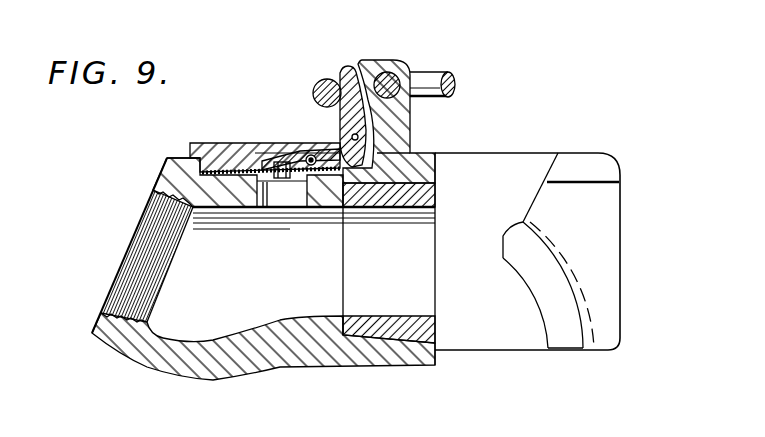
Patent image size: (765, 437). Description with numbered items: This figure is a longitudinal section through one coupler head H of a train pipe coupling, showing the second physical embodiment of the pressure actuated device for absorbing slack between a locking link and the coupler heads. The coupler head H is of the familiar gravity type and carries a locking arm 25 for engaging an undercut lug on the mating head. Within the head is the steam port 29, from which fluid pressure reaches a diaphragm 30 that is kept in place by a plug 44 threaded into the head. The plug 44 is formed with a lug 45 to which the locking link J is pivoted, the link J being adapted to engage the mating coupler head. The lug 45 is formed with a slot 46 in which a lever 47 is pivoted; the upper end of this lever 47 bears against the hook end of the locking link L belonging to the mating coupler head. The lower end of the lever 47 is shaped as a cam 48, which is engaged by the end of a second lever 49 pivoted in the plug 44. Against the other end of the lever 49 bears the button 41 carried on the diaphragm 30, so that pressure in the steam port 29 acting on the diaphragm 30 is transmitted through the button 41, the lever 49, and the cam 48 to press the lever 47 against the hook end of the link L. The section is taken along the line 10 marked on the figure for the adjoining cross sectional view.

The section line 10— 10 is at (282, 395).
The locking arm 25 is at (530, 167).
The steam port 29 is at (187, 322).
The diaphragm 30 is at (232, 206).
The button 41 is at (293, 238).
The plug 44 is at (222, 166).
The lug 45 is at (412, 132).
The slot 46 is at (360, 67).
The lever 47 is at (338, 72).
The cam 48 is at (338, 178).
The lever 49 is at (296, 160).
The coupler head H is at (200, 370).
The locking link J is at (441, 84).
The locking link L is at (321, 82).